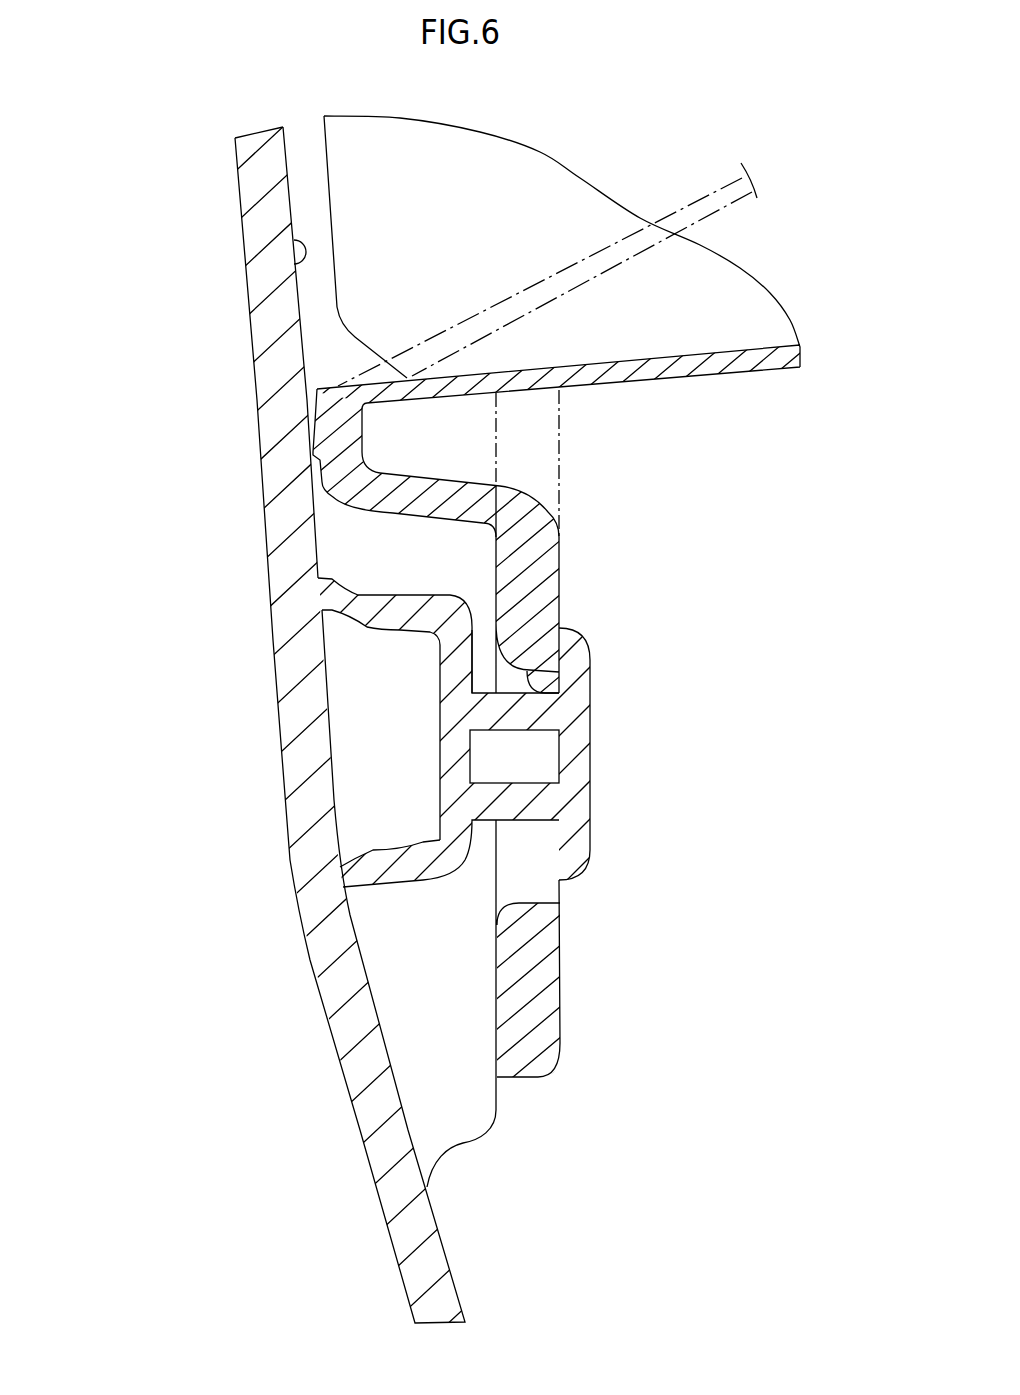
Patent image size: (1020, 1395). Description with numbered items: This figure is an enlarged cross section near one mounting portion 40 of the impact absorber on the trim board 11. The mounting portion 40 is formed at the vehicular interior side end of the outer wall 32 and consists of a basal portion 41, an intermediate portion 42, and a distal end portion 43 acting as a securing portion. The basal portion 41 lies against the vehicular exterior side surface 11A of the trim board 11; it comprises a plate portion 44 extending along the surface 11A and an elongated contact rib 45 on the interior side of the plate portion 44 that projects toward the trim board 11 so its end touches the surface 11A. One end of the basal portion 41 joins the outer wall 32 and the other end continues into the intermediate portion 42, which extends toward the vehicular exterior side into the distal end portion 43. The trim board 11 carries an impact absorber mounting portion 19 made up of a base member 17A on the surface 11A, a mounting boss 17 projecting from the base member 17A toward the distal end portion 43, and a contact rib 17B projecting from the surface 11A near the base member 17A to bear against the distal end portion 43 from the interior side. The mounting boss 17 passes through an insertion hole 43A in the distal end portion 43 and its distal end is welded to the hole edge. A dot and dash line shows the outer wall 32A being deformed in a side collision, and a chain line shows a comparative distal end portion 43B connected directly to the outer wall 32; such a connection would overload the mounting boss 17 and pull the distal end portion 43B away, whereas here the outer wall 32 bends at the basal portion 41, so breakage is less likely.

The trim board 11 is at (275, 197).
The vehicular exterior side surface 11A is at (297, 260).
The mounting boss 17 is at (575, 753).
The base member 17A is at (455, 775).
The contact rib 17B is at (428, 982).
The impact absorber mounting portion 19 is at (540, 802).
The outer wall 32 is at (707, 363).
The outer wall being deformed 32A is at (623, 247).
The mounting portion 40 is at (134, 420).
The basal portion 41 is at (174, 405).
The intermediate portion 42 is at (402, 502).
The distal end portion 43 is at (523, 590).
The insertion hole 43A is at (530, 692).
The distal end portion 43B is at (532, 443).
The plate portion 44 is at (337, 409).
The contact rib 45 is at (315, 443).